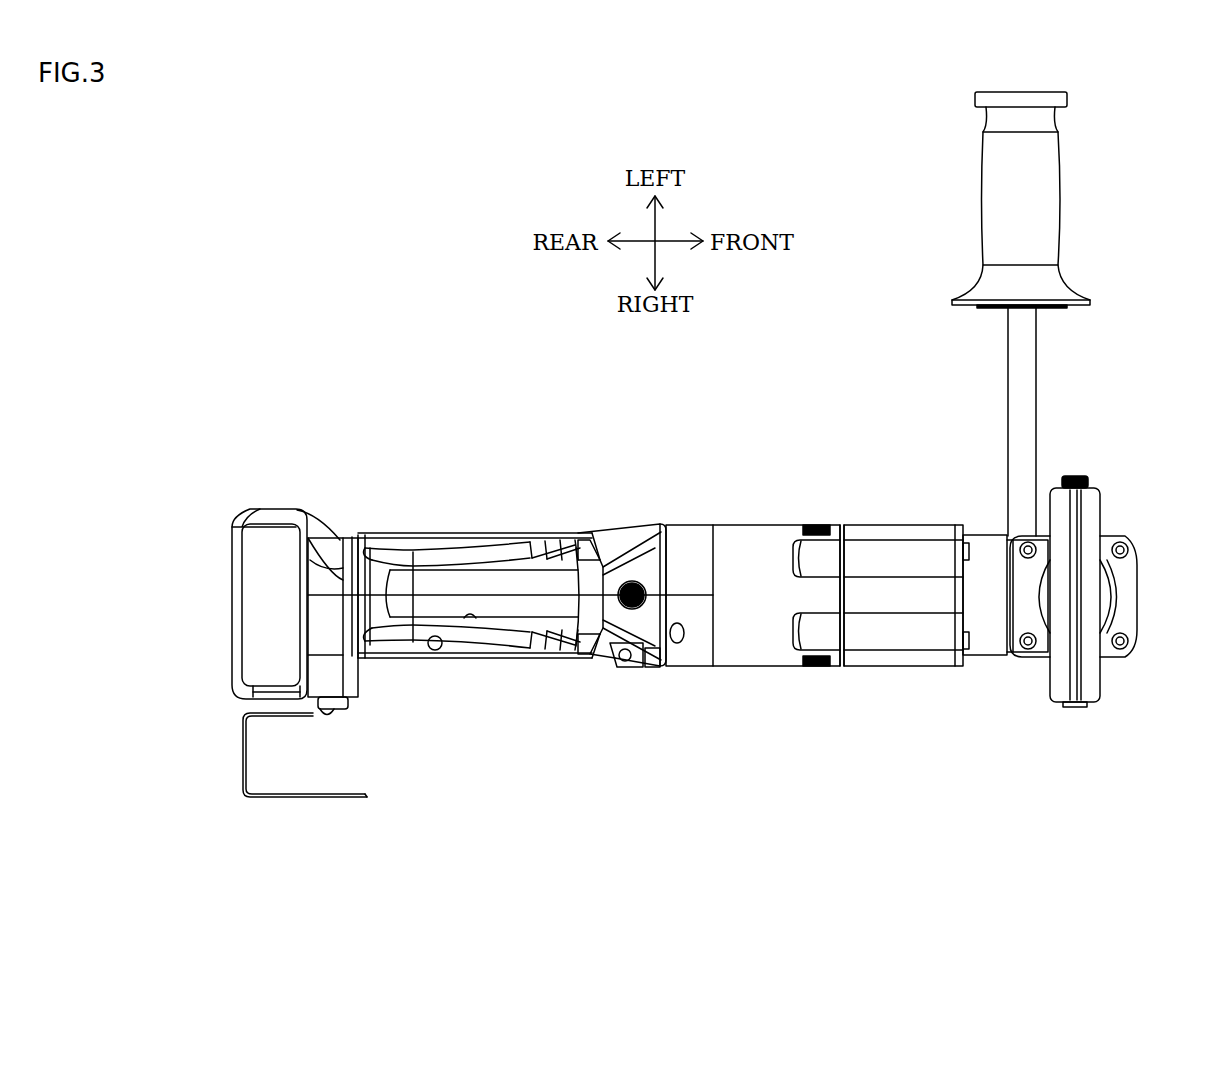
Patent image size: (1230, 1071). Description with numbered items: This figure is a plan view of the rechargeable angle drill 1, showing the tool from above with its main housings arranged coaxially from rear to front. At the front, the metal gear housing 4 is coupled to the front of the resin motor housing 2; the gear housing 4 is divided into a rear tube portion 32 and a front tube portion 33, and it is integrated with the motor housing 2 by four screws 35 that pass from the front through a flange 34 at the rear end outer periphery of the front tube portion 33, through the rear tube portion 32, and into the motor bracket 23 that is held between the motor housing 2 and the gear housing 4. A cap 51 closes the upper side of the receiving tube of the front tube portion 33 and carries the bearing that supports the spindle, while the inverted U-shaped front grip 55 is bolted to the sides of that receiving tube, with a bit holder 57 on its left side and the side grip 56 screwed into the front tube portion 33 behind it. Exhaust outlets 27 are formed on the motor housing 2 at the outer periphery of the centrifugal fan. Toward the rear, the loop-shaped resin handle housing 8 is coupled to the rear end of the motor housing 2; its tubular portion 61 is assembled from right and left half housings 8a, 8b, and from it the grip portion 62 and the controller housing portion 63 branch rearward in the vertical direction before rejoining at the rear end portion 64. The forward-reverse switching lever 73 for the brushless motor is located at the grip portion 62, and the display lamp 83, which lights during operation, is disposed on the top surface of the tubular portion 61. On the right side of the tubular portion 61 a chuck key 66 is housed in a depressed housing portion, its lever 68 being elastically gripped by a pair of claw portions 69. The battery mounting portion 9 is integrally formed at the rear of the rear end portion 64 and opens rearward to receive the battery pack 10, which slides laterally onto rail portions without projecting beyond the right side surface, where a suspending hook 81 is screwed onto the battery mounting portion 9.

The rechargeable angle drill 1 is at (838, 400).
The motor housing 2 is at (738, 545).
The gear housing 4 is at (938, 524).
The handle housing 8 is at (455, 533).
The right half housing 8a is at (488, 540).
The left half housing 8b is at (488, 650).
The battery mounting portion 9 is at (333, 672).
The battery pack 10 is at (270, 548).
The motor bracket 23 is at (843, 528).
The exhaust outlet 27 is at (812, 525).
The rear tube portion 32 is at (900, 530).
The front tube portion 33 is at (993, 620).
The flange 34 is at (956, 530).
The screw 35 is at (973, 548).
The cap 51 is at (1110, 595).
The front grip 55 is at (1088, 512).
The side grip 56 is at (1040, 190).
The bit holder 57 is at (1075, 478).
The tubular portion 61 is at (690, 555).
The grip portion 62 is at (425, 580).
The controller housing portion 63 is at (455, 650).
The rear end portion 64 is at (363, 577).
The chuck key 66 is at (614, 662).
The lever 68 is at (626, 667).
The claw portion 69 is at (655, 665).
The forward-reverse switching lever 73 is at (585, 540).
The hook 81 is at (325, 797).
The display lamp 83 is at (632, 580).